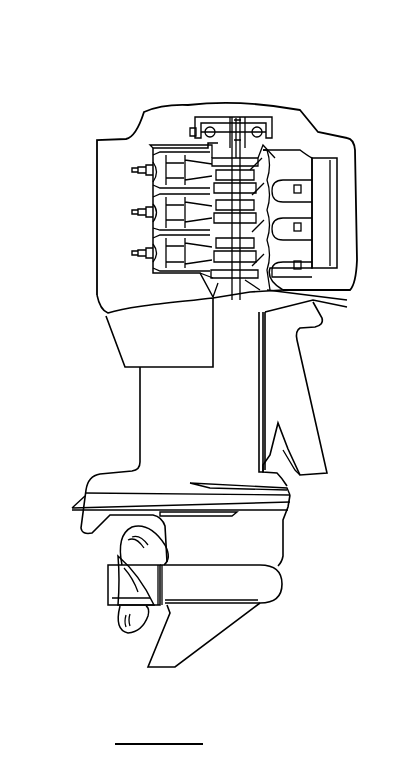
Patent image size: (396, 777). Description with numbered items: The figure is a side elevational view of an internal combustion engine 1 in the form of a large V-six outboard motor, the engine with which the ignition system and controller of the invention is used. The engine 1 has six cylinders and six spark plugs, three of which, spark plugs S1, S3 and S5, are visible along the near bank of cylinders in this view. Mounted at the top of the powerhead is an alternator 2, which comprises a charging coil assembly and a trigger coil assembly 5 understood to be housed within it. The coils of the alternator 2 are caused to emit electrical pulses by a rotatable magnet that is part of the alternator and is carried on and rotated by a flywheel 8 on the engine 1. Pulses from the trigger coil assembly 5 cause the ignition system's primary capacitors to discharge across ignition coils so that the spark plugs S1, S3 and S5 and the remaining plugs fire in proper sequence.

The internal combustion engine 1 is at (120, 347).
The alternator 2 is at (286, 119).
The trigger coil assembly 5 is at (262, 123).
The flywheel 8 is at (192, 122).
The spark plug S1 is at (132, 170).
The spark plug S3 is at (132, 212).
The spark plug S5 is at (132, 252).